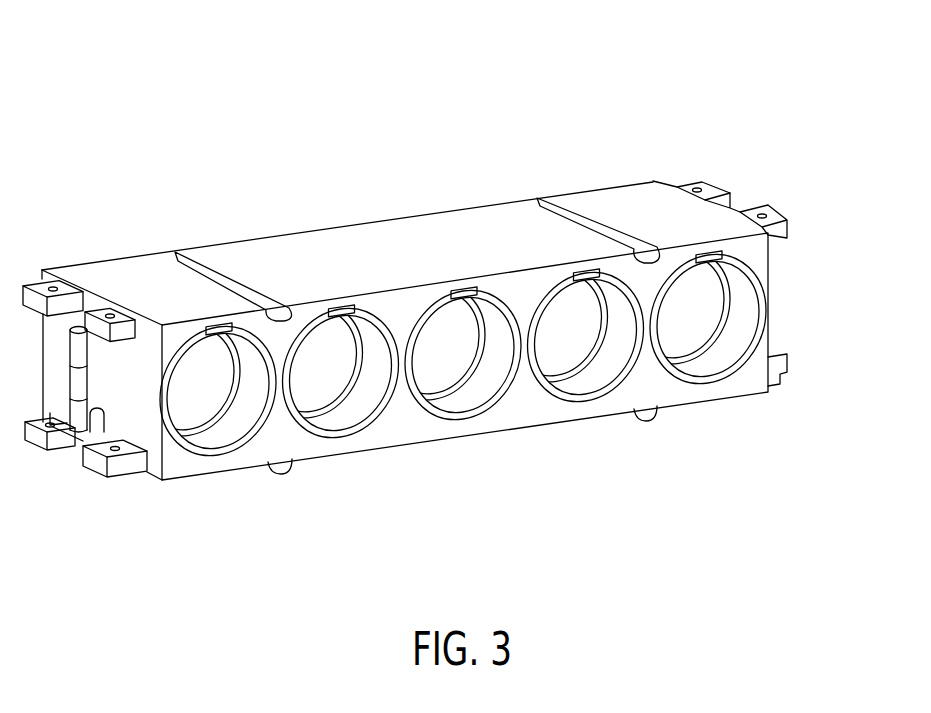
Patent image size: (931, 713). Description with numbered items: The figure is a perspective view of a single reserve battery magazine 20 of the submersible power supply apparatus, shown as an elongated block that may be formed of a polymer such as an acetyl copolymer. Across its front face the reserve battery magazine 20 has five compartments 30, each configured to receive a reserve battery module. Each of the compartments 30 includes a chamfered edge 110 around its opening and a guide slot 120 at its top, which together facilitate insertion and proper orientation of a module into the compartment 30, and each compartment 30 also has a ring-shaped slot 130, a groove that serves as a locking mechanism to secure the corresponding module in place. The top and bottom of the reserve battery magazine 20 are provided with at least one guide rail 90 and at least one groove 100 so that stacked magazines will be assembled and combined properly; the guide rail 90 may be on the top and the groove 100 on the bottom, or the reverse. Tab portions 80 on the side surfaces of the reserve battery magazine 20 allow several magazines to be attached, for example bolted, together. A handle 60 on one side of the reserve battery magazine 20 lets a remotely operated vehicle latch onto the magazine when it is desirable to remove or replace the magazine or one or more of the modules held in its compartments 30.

The reserve battery magazine 20 is at (672, 96).
The compartment 30 is at (735, 325).
The handle 60 is at (65, 380).
The tab portion 80 is at (781, 212).
The guide rail 90 is at (658, 420).
The groove 100 is at (556, 198).
The chamfered edge 110 is at (463, 413).
The guide slot 120 is at (472, 290).
The slot 130 is at (338, 412).